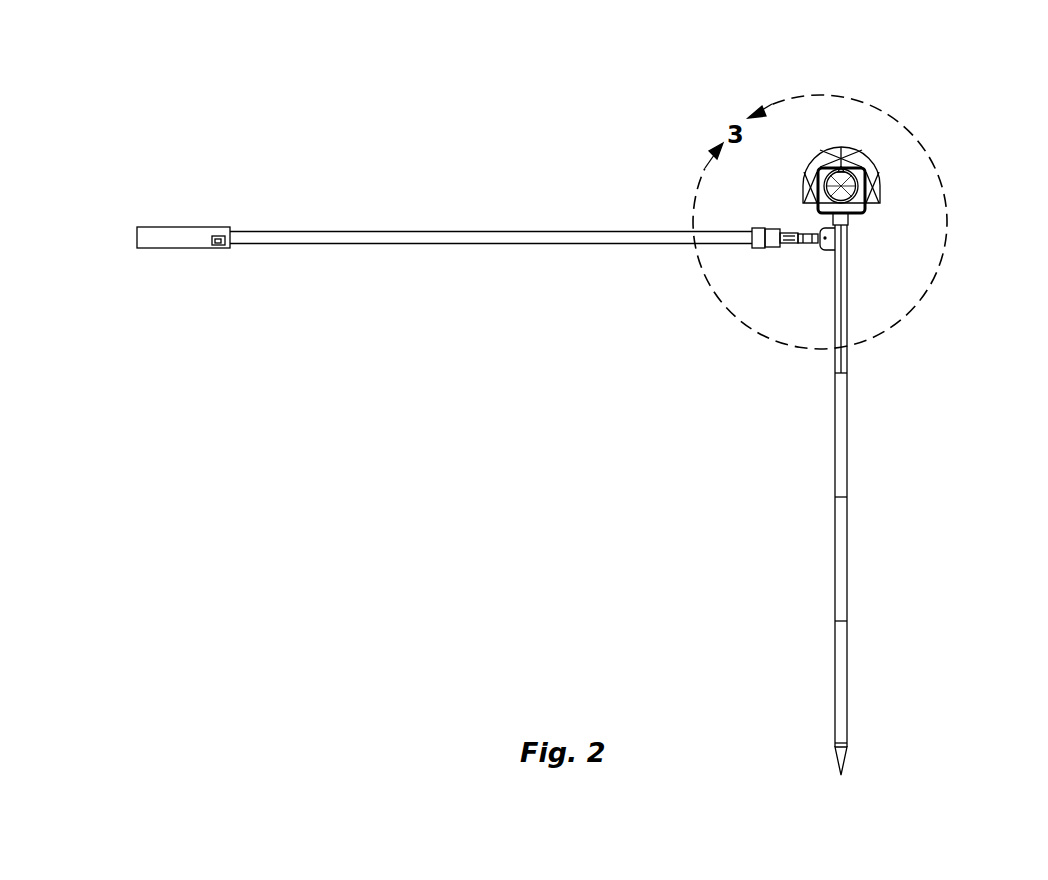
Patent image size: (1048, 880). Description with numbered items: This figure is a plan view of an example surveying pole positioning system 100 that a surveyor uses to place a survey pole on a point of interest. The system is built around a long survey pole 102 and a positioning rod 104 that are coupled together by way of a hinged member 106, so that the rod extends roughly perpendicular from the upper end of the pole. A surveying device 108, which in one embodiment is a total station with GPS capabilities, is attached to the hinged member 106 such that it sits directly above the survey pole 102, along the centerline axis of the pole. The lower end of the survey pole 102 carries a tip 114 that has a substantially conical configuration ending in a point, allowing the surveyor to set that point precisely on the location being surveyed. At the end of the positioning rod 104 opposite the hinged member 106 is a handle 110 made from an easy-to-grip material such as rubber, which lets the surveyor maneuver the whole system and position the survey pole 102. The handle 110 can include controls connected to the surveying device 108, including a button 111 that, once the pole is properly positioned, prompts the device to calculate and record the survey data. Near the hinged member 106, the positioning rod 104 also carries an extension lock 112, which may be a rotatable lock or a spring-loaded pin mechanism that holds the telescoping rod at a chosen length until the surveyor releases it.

The surveying pole positioning system 100 is at (946, 96).
The survey pole 102 is at (847, 432).
The positioning rod 104 is at (492, 231).
The hinged member 106 is at (848, 242).
The surveying device 108 is at (845, 147).
The handle 110 is at (210, 227).
The button 111 is at (220, 247).
The extension lock 112 is at (757, 247).
The tip 114 is at (843, 764).